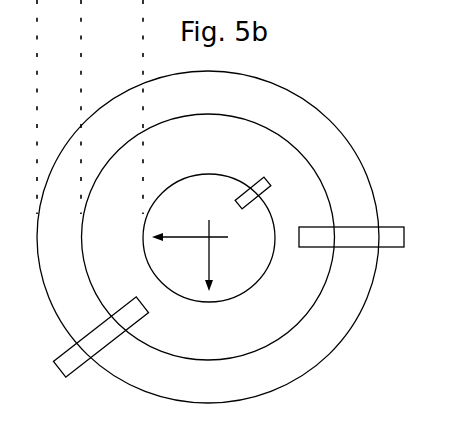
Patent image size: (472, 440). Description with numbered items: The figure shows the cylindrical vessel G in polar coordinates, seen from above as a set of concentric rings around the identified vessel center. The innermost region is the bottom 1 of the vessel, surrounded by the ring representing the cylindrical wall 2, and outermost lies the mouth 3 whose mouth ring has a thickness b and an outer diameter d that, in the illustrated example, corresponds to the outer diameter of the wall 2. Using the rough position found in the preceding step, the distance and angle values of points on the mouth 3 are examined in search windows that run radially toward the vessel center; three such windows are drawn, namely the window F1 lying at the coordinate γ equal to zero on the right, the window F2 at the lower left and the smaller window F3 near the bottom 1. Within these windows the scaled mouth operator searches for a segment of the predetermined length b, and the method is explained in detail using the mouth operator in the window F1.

The bottom 1 is at (265, 241).
The cylindrical wall 2 is at (132, 266).
The mouth 3 is at (314, 124).
The window F1 is at (388, 240).
The window F2 is at (73, 360).
The window F3 is at (266, 189).